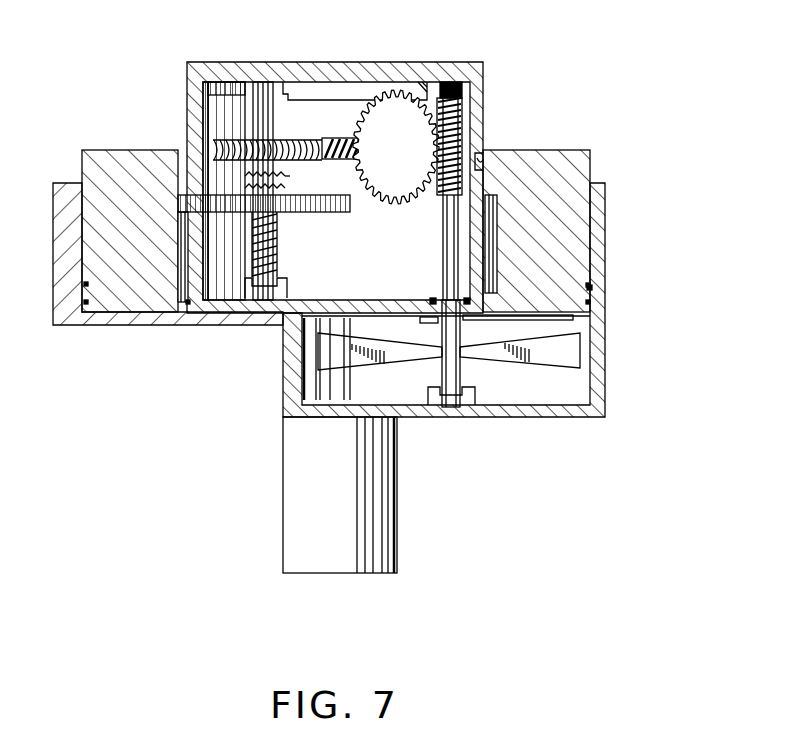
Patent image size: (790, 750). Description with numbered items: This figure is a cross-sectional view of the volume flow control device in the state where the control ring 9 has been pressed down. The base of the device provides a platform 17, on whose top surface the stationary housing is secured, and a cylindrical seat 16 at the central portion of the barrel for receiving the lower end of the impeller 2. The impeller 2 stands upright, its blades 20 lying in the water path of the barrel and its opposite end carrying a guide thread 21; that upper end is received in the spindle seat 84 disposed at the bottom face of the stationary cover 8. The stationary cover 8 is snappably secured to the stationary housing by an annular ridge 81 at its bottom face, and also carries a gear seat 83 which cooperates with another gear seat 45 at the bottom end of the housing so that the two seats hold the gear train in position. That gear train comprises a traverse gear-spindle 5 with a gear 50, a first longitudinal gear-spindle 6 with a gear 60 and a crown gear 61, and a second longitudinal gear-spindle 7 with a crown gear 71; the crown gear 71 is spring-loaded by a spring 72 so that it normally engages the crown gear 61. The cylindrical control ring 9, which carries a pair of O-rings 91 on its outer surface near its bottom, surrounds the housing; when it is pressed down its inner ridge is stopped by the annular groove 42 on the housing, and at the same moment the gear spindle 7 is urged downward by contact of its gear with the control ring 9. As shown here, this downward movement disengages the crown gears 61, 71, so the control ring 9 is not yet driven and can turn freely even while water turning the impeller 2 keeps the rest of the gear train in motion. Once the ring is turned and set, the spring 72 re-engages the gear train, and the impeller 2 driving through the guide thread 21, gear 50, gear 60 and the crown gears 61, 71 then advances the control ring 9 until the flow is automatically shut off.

The impeller 2 is at (458, 372).
The traverse gear-spindle 5 is at (375, 148).
The first longitudinal gear-spindle 6 is at (273, 113).
The second longitudinal gear-spindle 7 is at (275, 252).
The stationary cover 8 is at (403, 70).
The control ring 9 is at (552, 150).
The seat 16 is at (434, 395).
The platform 17 is at (217, 318).
The blades 20 is at (562, 358).
The guide thread 21 is at (441, 190).
The annular groove 42 is at (485, 160).
The gear seat 45 is at (287, 284).
The gear 50 is at (388, 100).
The gear 60 is at (308, 144).
The crown gear 61 is at (305, 165).
The crown gear 71 is at (285, 188).
The spring 72 is at (278, 230).
The annular ridge 81 is at (206, 88).
The gear seat 83 is at (290, 92).
The spindle seat 84 is at (462, 92).
The O-rings 91 is at (590, 290).